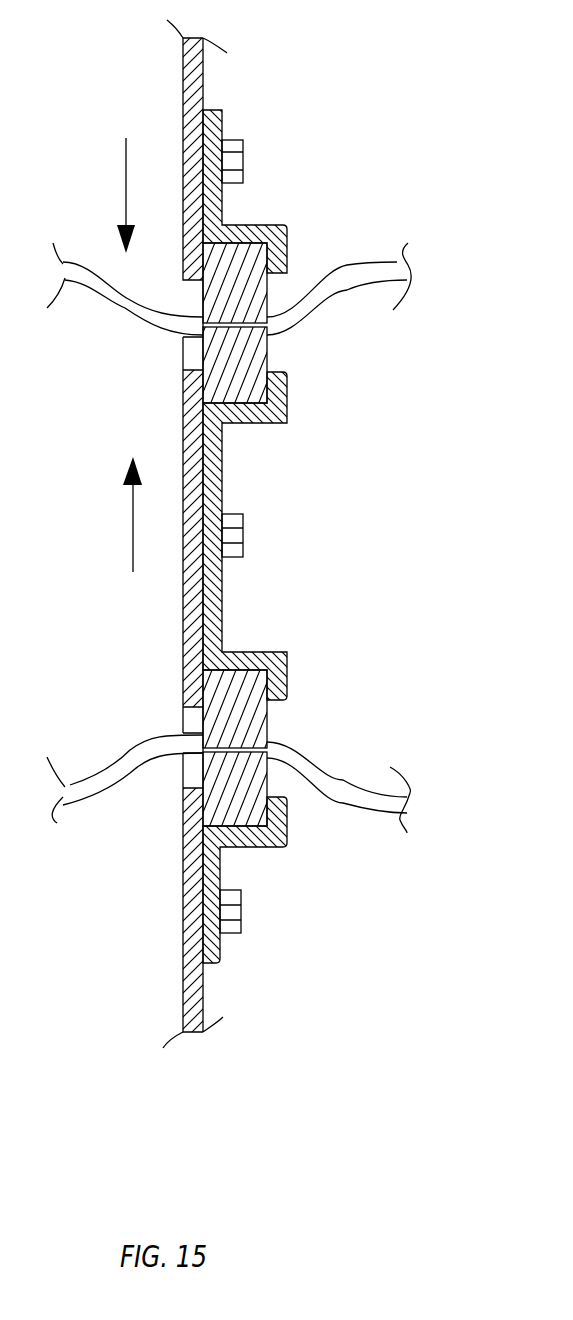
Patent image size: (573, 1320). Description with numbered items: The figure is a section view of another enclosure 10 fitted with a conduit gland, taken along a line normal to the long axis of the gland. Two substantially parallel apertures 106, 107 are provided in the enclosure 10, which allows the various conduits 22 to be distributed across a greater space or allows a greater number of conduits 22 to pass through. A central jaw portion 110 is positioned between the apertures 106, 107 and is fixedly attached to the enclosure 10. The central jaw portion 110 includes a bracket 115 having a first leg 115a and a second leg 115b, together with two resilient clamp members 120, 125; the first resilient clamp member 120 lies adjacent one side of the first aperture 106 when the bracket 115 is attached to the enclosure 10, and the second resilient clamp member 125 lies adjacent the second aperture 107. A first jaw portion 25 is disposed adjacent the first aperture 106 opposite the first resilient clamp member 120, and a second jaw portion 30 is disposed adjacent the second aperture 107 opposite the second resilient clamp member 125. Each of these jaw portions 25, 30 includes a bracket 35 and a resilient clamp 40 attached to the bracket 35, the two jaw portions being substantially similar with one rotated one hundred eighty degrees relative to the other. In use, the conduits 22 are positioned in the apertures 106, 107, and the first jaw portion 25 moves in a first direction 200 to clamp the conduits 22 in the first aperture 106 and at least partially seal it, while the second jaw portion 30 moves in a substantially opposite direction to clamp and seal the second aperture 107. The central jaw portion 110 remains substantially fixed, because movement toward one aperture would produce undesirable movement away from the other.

The enclosure 10 is at (203, 65).
The conduits 22 is at (390, 257).
The first jaw portion 25 is at (297, 166).
The second jaw portion 30 is at (305, 903).
The bracket 35 is at (222, 203).
The resilient clamp 40 is at (268, 302).
The first aperture 106 is at (193, 367).
The second aperture 107 is at (187, 712).
The central jaw portion 110 is at (330, 500).
The bracket 115 is at (222, 603).
The first leg 115a is at (260, 422).
The second leg 115b is at (265, 660).
The first resilient clamp member 120 is at (268, 355).
The second resilient clamp member 125 is at (267, 712).
The first direction 200 is at (125, 177).